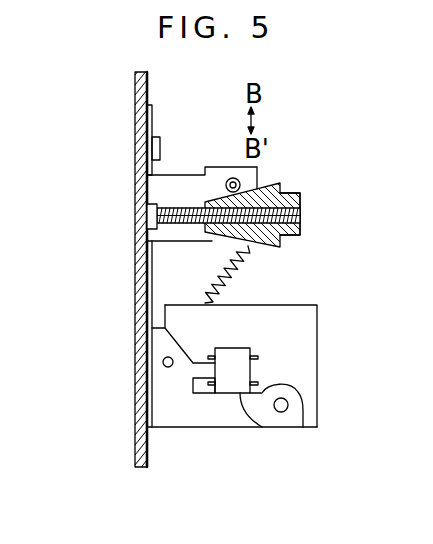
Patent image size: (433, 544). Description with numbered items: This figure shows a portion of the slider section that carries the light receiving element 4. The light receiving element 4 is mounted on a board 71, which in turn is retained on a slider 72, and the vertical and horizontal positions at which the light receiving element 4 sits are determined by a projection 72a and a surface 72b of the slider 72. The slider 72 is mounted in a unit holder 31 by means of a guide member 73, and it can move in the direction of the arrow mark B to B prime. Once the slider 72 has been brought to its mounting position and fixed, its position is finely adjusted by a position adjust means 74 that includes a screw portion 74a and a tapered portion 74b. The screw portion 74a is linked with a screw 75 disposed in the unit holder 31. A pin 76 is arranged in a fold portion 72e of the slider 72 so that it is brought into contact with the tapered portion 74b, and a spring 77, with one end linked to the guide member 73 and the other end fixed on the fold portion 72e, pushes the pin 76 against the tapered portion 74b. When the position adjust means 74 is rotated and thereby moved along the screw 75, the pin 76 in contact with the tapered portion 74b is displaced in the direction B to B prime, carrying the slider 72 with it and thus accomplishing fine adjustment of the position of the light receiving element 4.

The unit holder 31 is at (141, 441).
The guide member 73 is at (157, 150).
The position adjust means 74 is at (291, 245).
The screw portion 74a is at (294, 194).
The tapered portion 74b is at (222, 199).
The screw 75 is at (147, 206).
The pin 76 is at (234, 178).
The spring 77 is at (209, 277).
The light receiving element 4 is at (256, 371).
The board 71 is at (318, 386).
The slider 72 is at (207, 428).
The projection 72a is at (201, 362).
The surface 72b is at (262, 428).
The fold portion 72e is at (150, 237).